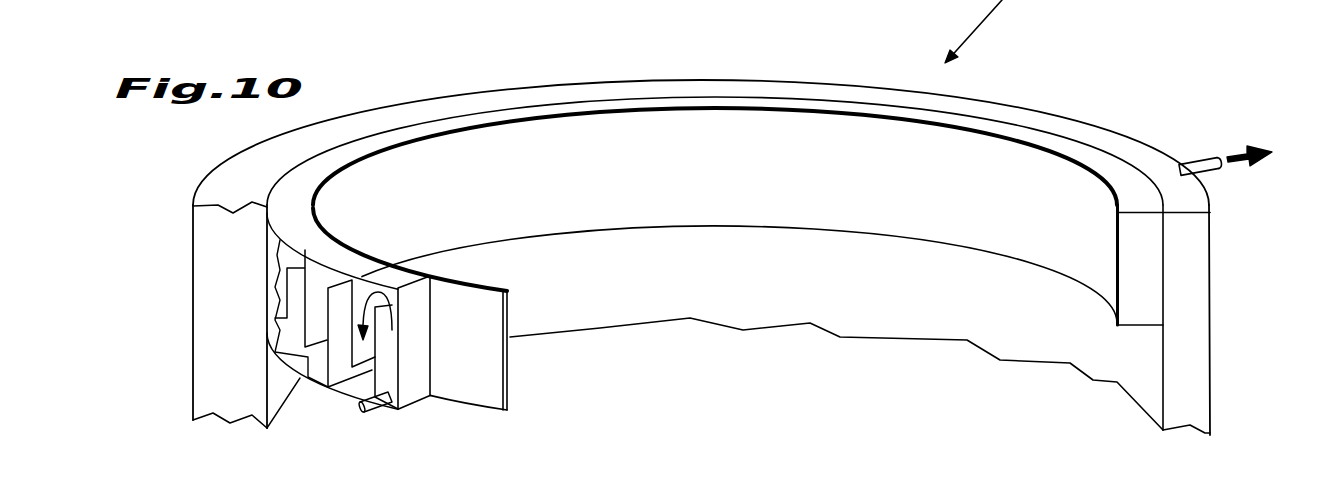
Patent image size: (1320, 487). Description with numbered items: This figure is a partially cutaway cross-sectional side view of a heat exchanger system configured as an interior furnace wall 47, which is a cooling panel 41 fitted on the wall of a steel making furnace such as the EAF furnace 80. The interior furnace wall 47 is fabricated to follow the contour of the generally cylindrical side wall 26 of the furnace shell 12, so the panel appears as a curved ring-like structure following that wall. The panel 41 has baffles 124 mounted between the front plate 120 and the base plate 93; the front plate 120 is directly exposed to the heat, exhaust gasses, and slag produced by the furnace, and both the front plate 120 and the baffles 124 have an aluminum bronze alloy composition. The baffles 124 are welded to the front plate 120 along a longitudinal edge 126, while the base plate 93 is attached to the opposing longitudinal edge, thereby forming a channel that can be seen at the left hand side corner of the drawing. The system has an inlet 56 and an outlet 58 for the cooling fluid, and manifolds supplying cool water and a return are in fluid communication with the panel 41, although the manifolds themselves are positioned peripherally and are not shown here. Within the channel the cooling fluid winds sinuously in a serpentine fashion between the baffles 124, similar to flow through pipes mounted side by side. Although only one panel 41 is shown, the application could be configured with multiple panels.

The furnace shell 12 is at (1185, 433).
The cylindrical side wall 26 is at (1193, 287).
The cooling panel 41 is at (708, 182).
The interior furnace wall 47 is at (873, 211).
The inlet 56 is at (363, 411).
The outlet 58 is at (1197, 158).
The EAF furnace 80 is at (1053, 117).
The base plate 93 is at (632, 97).
The front plate 120 is at (500, 400).
The baffles 124 is at (413, 393).
The longitudinal edge 126 is at (430, 340).